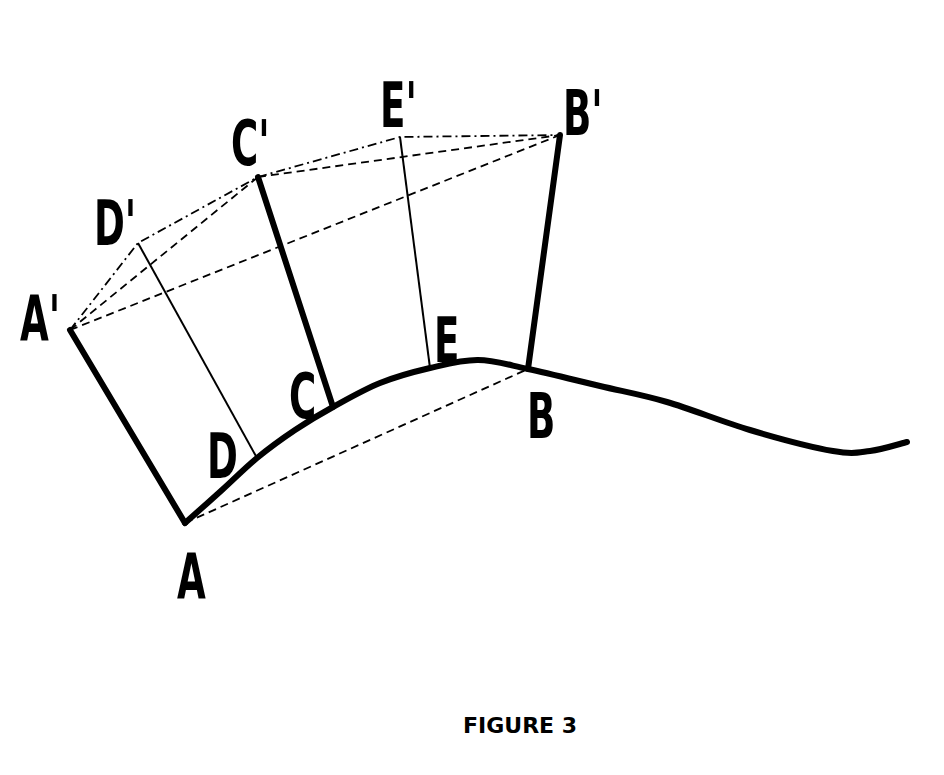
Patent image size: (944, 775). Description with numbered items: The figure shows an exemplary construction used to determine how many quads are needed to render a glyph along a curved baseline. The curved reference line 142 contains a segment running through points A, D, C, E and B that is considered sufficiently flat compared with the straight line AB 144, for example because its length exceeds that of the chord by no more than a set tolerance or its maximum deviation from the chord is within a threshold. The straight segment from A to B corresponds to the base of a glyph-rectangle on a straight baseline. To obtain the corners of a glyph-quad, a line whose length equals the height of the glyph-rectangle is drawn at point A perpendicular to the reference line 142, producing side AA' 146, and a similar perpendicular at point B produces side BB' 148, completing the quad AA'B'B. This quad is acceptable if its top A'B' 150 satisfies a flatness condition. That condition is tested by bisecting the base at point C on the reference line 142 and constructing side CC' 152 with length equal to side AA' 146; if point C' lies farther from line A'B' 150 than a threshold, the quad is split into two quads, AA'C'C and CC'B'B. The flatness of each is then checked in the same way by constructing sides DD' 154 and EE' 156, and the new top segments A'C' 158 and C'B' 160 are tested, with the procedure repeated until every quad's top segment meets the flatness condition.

The reference line 142 is at (670, 403).
The straight line AB 144 is at (403, 427).
The side AA' 146 is at (99, 393).
The side BB' 148 is at (551, 237).
The top A'B' 150 is at (507, 157).
The side CC' 152 is at (287, 258).
The side DD' 154 is at (191, 335).
The side EE' 156 is at (418, 253).
The top segment A'C' 158 is at (205, 218).
The top segment C'B' 160 is at (485, 143).